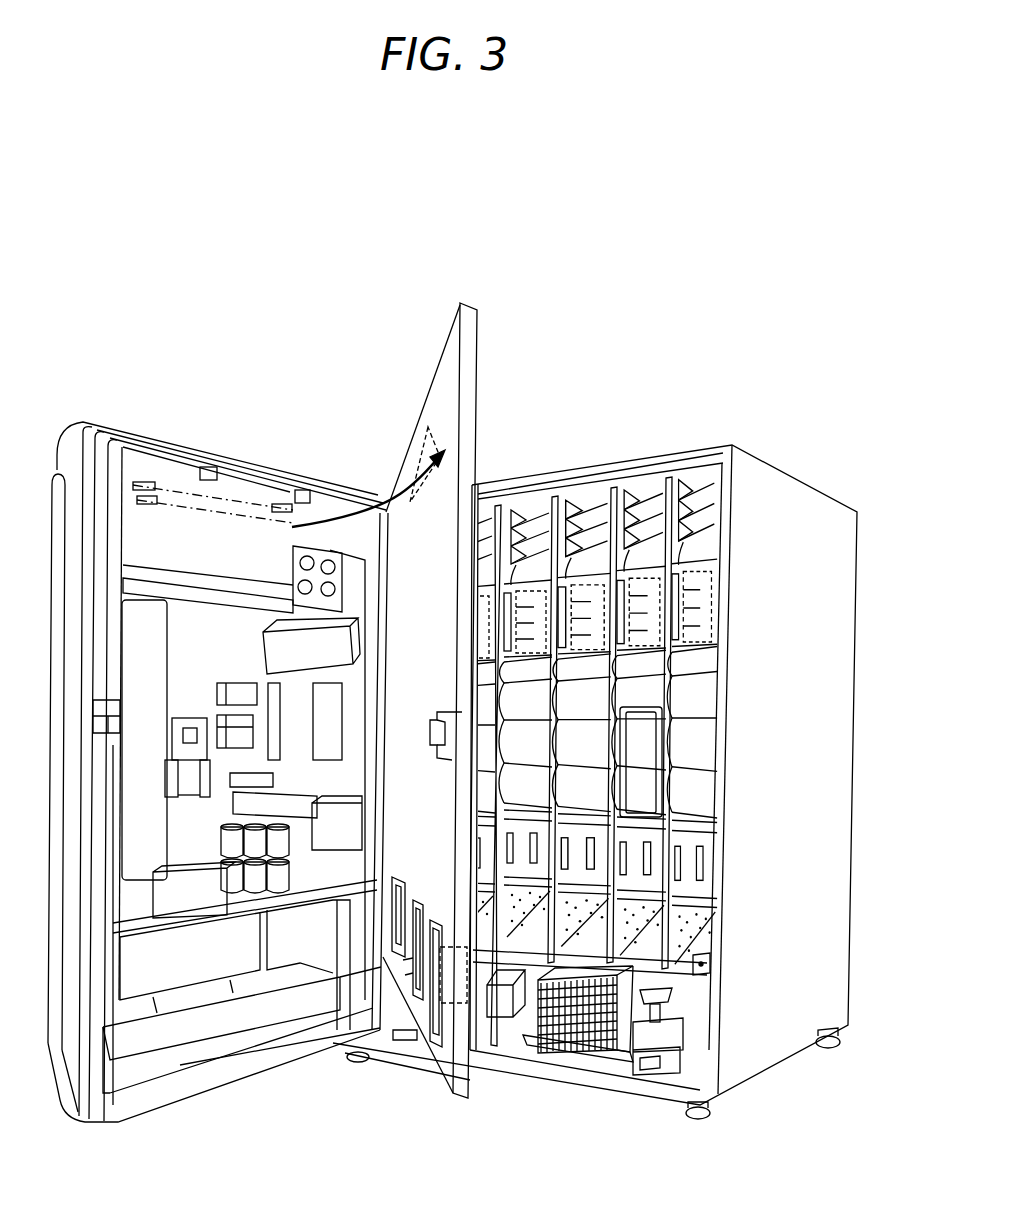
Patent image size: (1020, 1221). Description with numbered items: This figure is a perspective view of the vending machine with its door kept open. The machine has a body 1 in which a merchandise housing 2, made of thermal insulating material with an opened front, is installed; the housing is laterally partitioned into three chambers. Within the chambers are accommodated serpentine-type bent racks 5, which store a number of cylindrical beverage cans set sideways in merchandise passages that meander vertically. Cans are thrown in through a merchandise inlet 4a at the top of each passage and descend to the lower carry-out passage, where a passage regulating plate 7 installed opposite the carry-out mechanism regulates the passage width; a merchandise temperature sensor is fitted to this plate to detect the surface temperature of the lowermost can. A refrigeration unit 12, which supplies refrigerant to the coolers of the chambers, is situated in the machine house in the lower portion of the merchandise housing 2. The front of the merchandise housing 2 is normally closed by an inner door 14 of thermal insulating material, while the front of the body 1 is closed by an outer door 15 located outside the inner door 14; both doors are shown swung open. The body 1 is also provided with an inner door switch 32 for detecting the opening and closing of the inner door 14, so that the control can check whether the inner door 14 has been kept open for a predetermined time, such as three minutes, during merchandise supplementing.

The body 1 is at (797, 478).
The merchandise housing 2 is at (555, 497).
The merchandise inlet 4a is at (702, 483).
The bent rack 5 is at (703, 748).
The passage regulating plate 7 is at (703, 882).
The refrigeration unit 12 is at (570, 1057).
The inner door 14 is at (467, 425).
The outer door 15 is at (243, 457).
The inner door switch 32 is at (700, 975).